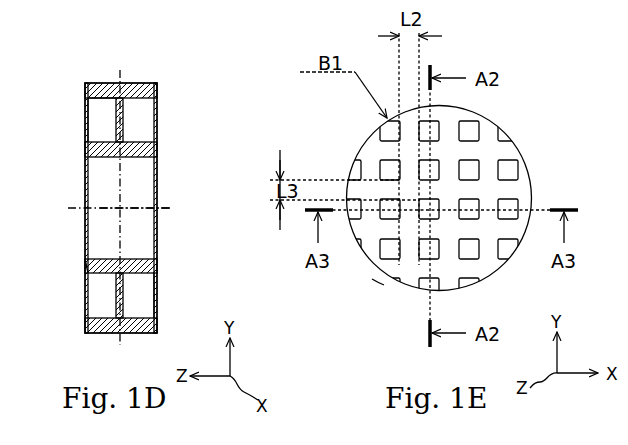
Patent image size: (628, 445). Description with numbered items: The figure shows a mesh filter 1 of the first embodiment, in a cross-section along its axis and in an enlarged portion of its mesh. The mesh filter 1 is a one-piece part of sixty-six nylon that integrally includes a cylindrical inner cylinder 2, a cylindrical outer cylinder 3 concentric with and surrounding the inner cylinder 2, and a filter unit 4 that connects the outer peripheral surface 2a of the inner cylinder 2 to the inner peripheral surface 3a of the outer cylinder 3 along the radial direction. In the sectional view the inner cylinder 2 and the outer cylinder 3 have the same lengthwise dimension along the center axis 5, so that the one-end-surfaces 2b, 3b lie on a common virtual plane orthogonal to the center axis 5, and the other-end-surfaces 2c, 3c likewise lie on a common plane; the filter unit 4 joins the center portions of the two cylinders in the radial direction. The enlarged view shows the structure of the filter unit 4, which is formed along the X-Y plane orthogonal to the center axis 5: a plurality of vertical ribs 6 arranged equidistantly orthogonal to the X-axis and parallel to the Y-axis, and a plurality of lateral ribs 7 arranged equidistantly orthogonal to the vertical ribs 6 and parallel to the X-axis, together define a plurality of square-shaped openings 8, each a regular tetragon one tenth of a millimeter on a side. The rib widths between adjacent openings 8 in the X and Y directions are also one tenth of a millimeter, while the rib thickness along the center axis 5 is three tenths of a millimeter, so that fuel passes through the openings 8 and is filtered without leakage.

In FIG. 1D, the mesh filter 1 is at (158, 81).
In FIG. 1E, the mesh filter 1 is at (490, 116).
In FIG. 1D, the inner cylinder 2 is at (87, 156).
In FIG. 1D, the outer peripheral surface of the inner cylinder 2a is at (104, 141).
In FIG. 1D, the one-end-surface of the inner cylinder 2b is at (157, 267).
In FIG. 1D, the other-end-surface of the inner cylinder 2c is at (87, 267).
In FIG. 1D, the outer cylinder 3 is at (103, 81).
In FIG. 1D, the inner peripheral surface of the outer cylinder 3a is at (100, 99).
In FIG. 1D, the one-end-surface of the outer cylinder 3b is at (157, 326).
In FIG. 1D, the other-end-surface of the outer cylinder 3c is at (87, 320).
In FIG. 1D, the filter unit 4 is at (124, 128).
In FIG. 1E, the filter unit 4 is at (382, 277).
In FIG. 1D, the center axis 5 is at (167, 207).
In FIG. 1E, the vertical ribs 6 is at (447, 205).
In FIG. 1E, the lateral ribs 7 is at (467, 190).
In FIG. 1E, the openings 8 is at (495, 202).